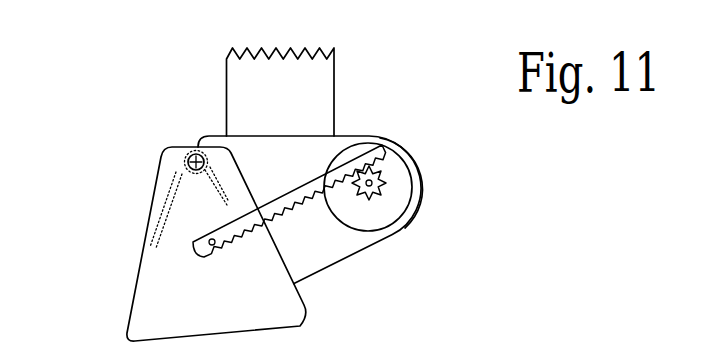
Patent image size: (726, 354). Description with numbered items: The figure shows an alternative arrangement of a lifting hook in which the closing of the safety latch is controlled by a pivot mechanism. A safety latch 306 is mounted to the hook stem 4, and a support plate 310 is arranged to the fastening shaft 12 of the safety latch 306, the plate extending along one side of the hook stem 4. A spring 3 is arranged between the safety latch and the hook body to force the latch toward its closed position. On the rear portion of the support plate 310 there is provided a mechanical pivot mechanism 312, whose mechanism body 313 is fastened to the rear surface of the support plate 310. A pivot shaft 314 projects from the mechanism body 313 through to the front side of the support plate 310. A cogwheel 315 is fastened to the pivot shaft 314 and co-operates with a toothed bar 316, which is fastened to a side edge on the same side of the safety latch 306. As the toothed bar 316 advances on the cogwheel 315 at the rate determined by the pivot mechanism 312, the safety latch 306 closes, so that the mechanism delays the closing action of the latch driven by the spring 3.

The spring 3 is at (170, 183).
The hook stem 4 is at (226, 66).
The fastening shaft 12 is at (192, 151).
The safety latch 306 is at (120, 268).
The support plate 310 is at (343, 135).
The mechanical pivot mechanism 312 is at (407, 152).
The mechanism body 313 is at (400, 205).
The pivot shaft 314 is at (386, 182).
The cogwheel 315 is at (378, 197).
The toothed bar 316 is at (295, 190).